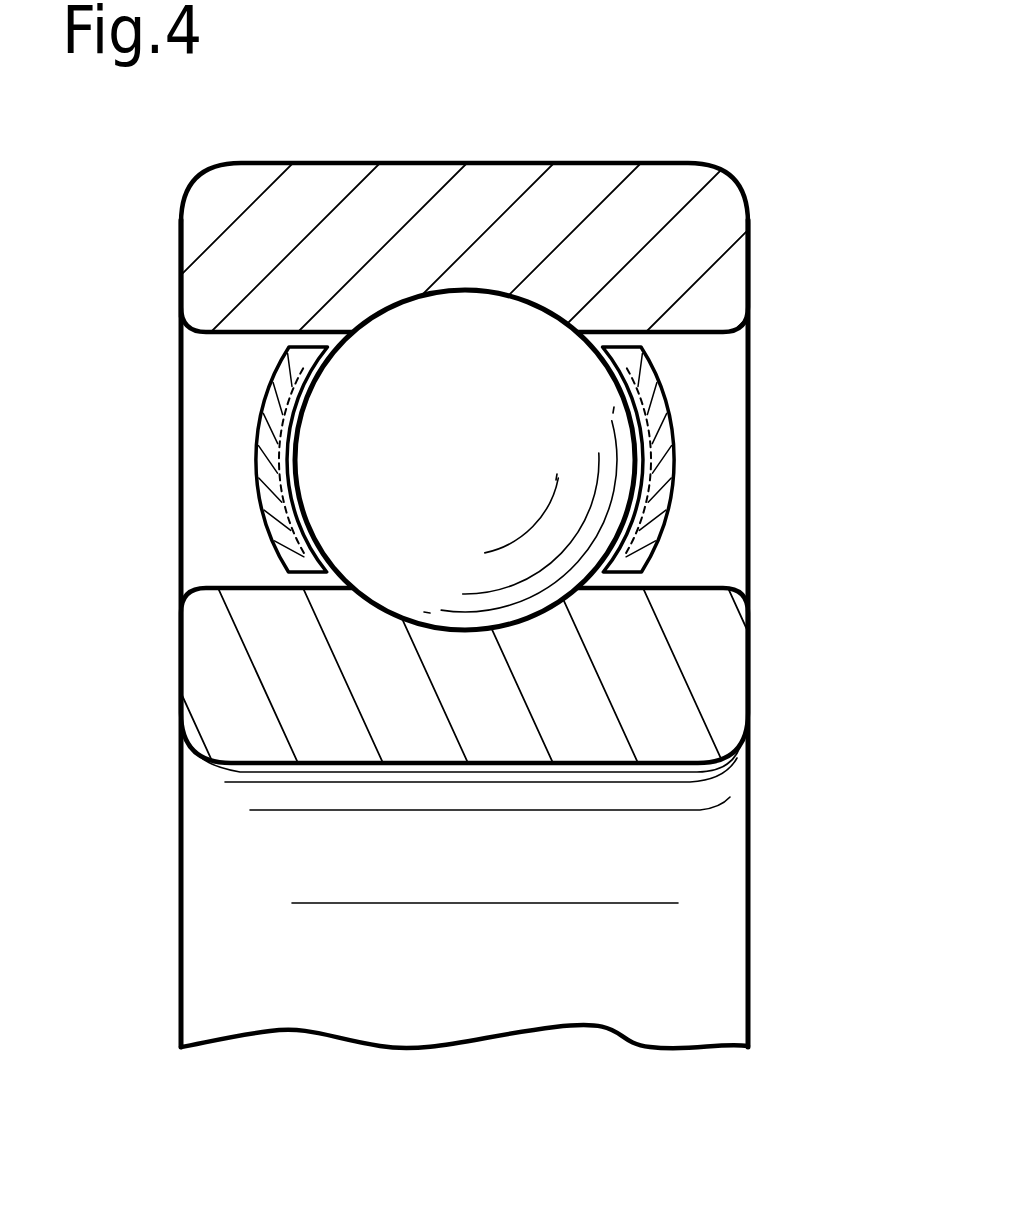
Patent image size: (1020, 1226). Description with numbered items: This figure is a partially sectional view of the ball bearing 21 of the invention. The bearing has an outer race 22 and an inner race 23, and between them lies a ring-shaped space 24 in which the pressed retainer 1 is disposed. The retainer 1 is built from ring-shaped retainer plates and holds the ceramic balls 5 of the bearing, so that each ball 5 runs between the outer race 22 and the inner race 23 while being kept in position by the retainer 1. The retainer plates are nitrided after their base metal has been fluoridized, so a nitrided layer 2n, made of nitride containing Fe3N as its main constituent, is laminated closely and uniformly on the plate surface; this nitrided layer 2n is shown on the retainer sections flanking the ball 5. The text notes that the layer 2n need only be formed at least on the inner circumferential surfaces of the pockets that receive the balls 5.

The ball bearing 21 is at (841, 183).
The outer race 22 is at (497, 188).
The inner race 23 is at (695, 700).
The ring-shaped space 24 is at (212, 401).
The ceramic ball 5 is at (388, 578).
The nitrided layer 2n is at (293, 440).
The pressed retainer 1 is at (667, 389).